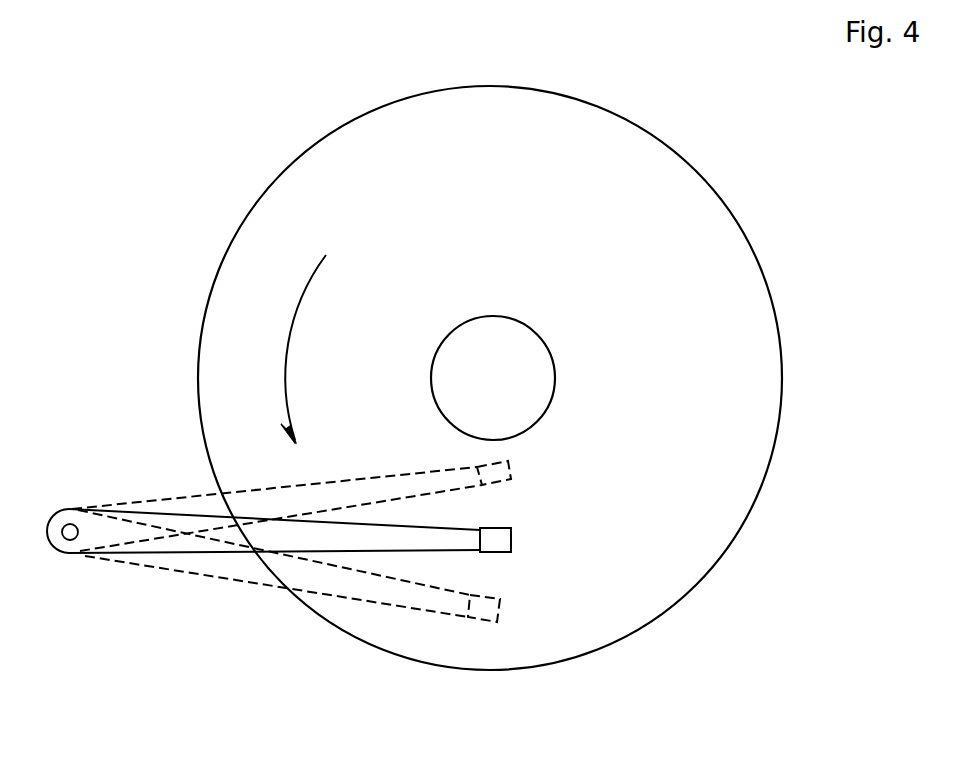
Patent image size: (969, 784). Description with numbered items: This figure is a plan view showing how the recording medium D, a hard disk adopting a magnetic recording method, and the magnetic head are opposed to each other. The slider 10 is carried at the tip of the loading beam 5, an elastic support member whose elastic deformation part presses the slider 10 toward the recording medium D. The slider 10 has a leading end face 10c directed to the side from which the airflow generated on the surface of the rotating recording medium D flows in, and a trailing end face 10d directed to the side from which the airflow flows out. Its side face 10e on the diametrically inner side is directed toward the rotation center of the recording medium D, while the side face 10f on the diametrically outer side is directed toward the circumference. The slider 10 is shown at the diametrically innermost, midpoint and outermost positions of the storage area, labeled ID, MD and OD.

The recording medium D is at (766, 382).
The loading beam 5 is at (328, 538).
The slider 10 is at (505, 556).
The side face 10e is at (492, 528).
The trailing end face 10d is at (511, 543).
The leading end face 10c is at (478, 538).
The side face 10f is at (495, 553).